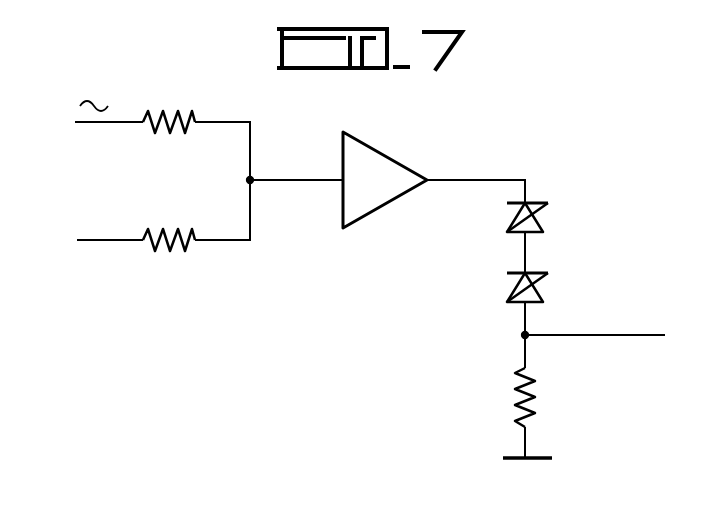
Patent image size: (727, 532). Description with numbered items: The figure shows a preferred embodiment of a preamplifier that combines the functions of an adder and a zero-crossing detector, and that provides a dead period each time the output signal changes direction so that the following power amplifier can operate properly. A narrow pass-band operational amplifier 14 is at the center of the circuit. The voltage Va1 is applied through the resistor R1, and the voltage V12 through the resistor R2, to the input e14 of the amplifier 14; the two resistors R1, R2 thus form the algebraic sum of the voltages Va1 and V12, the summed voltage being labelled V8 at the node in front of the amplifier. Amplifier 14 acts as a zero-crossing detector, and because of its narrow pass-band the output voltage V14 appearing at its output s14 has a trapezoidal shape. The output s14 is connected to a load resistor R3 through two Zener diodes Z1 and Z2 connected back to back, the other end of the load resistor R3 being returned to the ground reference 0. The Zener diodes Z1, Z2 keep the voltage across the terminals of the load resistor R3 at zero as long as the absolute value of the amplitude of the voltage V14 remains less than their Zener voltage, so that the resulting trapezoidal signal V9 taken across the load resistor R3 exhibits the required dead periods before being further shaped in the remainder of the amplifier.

The narrow pass-band operational amplifier 14 is at (382, 150).
The resistor R1 is at (167, 110).
The resistor R2 is at (167, 230).
The load resistor R3 is at (540, 400).
The Zener diode Z1 is at (540, 219).
The Zener diode Z2 is at (540, 292).
The ground reference 0 is at (527, 480).
The voltage Va1 is at (62, 121).
The voltage V12 is at (62, 242).
The summed voltage V8 is at (295, 182).
The input of amplifier e14 is at (333, 177).
The output of amplifier s14 is at (435, 177).
The output voltage of amplifier V14 is at (479, 184).
The trapezoidal signal V9 is at (612, 335).